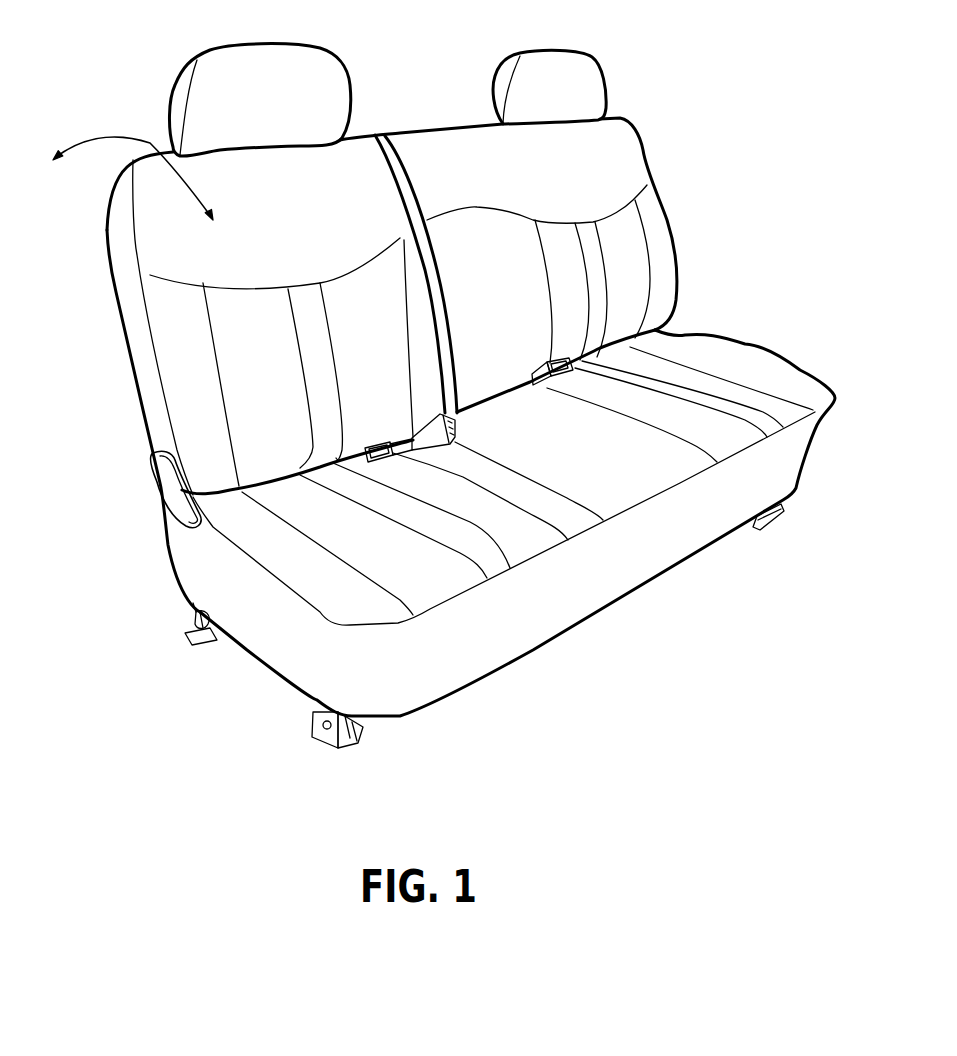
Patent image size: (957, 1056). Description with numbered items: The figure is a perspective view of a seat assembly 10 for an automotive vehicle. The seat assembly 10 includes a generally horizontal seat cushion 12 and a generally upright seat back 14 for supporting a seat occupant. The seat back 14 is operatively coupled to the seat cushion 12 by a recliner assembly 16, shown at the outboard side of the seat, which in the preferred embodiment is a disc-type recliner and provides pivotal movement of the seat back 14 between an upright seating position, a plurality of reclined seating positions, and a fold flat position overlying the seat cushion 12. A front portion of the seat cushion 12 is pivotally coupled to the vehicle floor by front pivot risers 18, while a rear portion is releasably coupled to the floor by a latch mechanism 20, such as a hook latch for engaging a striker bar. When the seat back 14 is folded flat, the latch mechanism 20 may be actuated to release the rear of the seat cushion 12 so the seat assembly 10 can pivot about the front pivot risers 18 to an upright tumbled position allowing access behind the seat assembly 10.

The seat assembly 10 is at (463, 395).
The seat cushion 12 is at (743, 345).
The seat back 14 is at (645, 148).
The recliner assembly 16 is at (163, 493).
The front pivot risers 18 is at (330, 737).
The latch mechanism 20 is at (193, 627).